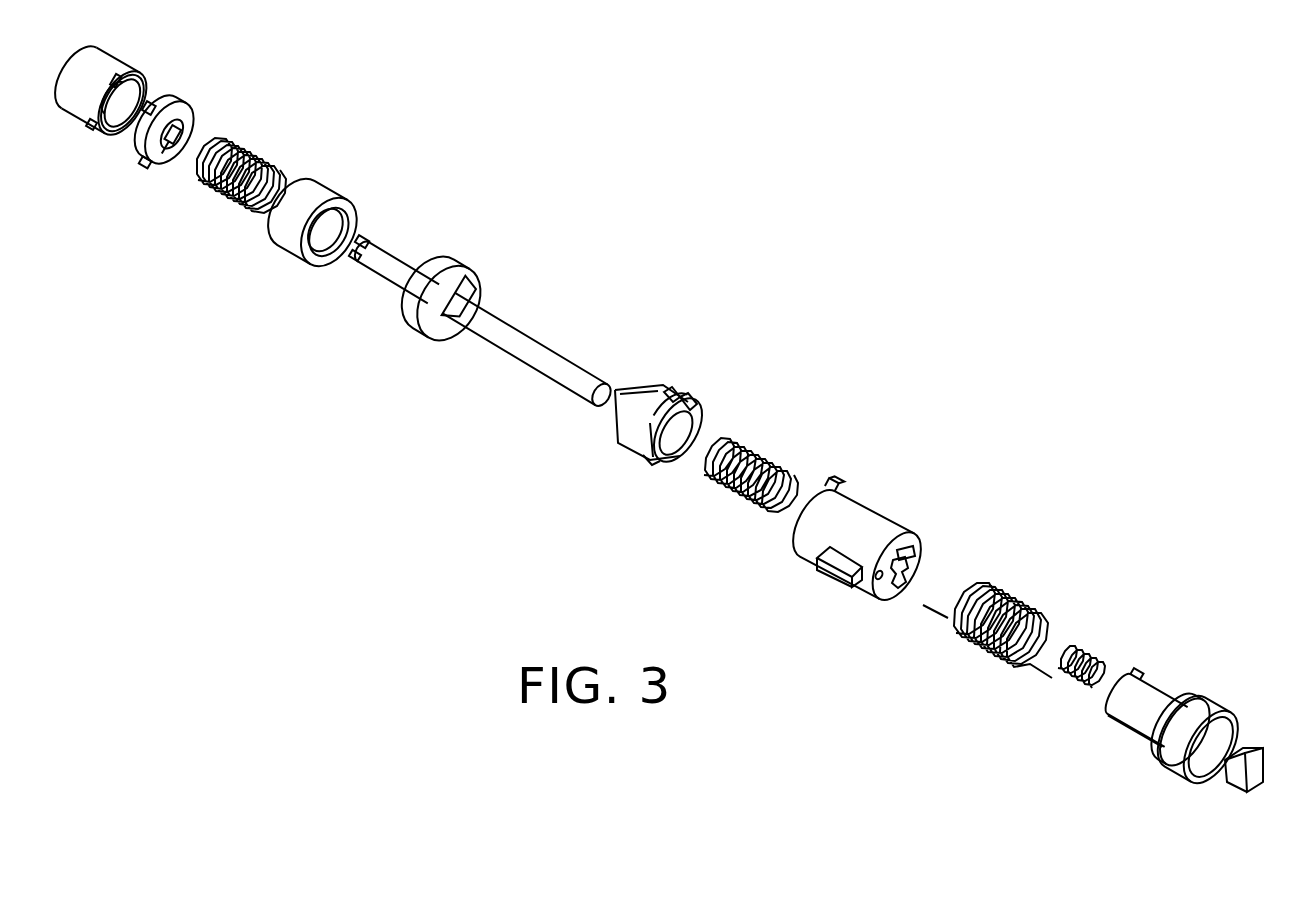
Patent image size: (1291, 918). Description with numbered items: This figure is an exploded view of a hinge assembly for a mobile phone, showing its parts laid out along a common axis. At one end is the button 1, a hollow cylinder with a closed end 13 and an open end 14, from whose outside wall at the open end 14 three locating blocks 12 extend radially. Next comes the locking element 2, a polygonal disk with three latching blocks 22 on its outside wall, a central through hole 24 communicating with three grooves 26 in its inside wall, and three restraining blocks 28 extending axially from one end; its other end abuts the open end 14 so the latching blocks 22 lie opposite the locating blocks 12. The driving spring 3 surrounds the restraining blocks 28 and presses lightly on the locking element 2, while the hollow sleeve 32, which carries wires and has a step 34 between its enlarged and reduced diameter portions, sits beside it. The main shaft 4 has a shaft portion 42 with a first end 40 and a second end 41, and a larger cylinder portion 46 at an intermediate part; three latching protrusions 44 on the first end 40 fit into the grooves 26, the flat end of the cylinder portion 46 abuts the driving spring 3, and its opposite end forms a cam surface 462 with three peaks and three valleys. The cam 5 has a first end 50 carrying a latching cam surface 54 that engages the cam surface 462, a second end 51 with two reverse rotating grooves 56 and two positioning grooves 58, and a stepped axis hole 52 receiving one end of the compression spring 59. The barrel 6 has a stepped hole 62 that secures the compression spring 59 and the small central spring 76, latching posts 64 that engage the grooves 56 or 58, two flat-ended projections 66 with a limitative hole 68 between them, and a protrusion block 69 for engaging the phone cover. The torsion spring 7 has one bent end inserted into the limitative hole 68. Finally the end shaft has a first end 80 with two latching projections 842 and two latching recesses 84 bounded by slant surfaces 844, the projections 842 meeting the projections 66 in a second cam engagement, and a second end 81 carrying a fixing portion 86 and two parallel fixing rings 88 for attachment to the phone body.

The button 1 is at (119, 84).
The locating blocks 12 is at (99, 122).
The closed end 13 is at (85, 52).
The open end 14 is at (128, 78).
The locking element 2 is at (169, 140).
The latching blocks 22 is at (195, 117).
The through hole 24 is at (177, 152).
The grooves 26 is at (150, 137).
The restraining blocks 28 is at (160, 150).
The driving spring 3 is at (250, 148).
The sleeve 32 is at (322, 214).
The step 34 is at (303, 188).
The main shaft 4 is at (475, 323).
The first end 40 is at (363, 273).
The second end 41 is at (602, 398).
The shaft portion 42 is at (550, 362).
The latching protrusions 44 is at (375, 242).
The cylinder portion 46 is at (455, 268).
The cam surface 462 is at (448, 336).
The cam 5 is at (668, 425).
The first end 50 is at (615, 410).
The second end 51 is at (688, 466).
The axis hole 52 is at (682, 437).
The latching cam surface 54 is at (643, 385).
The reverse rotating grooves 56 is at (676, 394).
The positioning grooves 58 is at (698, 410).
The compression spring 59 is at (760, 458).
The barrel 6 is at (871, 555).
The stepped hole 62 is at (910, 570).
The latching posts 64 is at (833, 487).
The projections 66 is at (914, 548).
The limitative hole 68 is at (880, 594).
The protrusion block 69 is at (828, 570).
The torsion spring 7 is at (1017, 597).
The central spring 76 is at (1078, 648).
The first end 80 is at (1138, 732).
The second end 81 is at (1257, 750).
The latching recesses 84 is at (1127, 690).
The latching projections 842 is at (1138, 678).
The slant surfaces 844 is at (1112, 712).
The fixing portion 86 is at (1247, 793).
The fixing rings 88 is at (1220, 712).